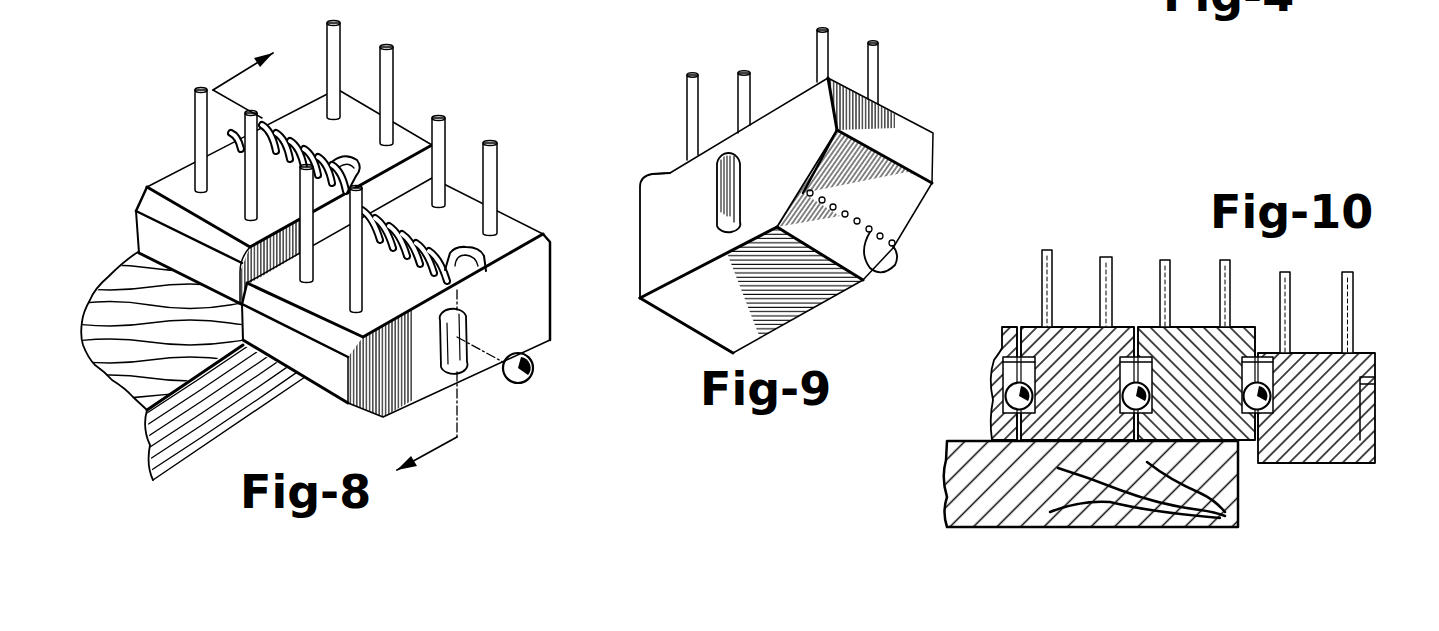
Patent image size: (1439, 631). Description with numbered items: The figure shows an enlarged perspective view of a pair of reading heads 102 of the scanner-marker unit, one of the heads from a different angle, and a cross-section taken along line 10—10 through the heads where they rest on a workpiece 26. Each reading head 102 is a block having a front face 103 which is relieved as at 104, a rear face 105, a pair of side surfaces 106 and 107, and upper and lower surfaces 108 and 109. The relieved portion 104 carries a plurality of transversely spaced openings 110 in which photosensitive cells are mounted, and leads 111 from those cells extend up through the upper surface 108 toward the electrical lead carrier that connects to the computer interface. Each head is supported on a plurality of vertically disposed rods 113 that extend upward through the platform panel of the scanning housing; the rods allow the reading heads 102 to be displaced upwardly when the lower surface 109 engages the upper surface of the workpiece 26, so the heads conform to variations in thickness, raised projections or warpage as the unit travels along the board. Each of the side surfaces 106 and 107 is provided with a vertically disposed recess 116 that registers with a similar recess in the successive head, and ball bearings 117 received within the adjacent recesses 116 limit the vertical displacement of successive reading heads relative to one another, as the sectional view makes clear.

In FIG. 8, the section line 10 is at (335, 258).
In FIG. 8, the workpiece 26 is at (255, 415).
In FIG. 10, the workpiece 26 is at (1220, 505).
In FIG. 9, the reading heads 102 is at (902, 113).
In FIG. 10, the reading heads 102 is at (1027, 321).
In FIG. 9, the front face 103 is at (918, 153).
In FIG. 9, the relieved portion 104 is at (907, 220).
In FIG. 9, the rear face 105 is at (640, 222).
In FIG. 9, the side surface 106 is at (670, 173).
In FIG. 8, the side surface 107 is at (540, 310).
In FIG. 8, the upper surface 108 is at (512, 218).
In FIG. 9, the lower surface 109 is at (793, 307).
In FIG. 9, the openings 110 is at (885, 270).
In FIG. 8, the leads 111 is at (496, 271).
In FIG. 8, the rods 113 is at (393, 77).
In FIG. 9, the rods 113 is at (817, 65).
In FIG. 10, the rods 113 is at (1353, 306).
In FIG. 8, the recess 116 is at (454, 341).
In FIG. 9, the recess 116 is at (737, 188).
In FIG. 10, the recess 116 is at (1370, 417).
In FIG. 8, the ball bearings 117 is at (520, 383).
In FIG. 10, the ball bearings 117 is at (1003, 399).